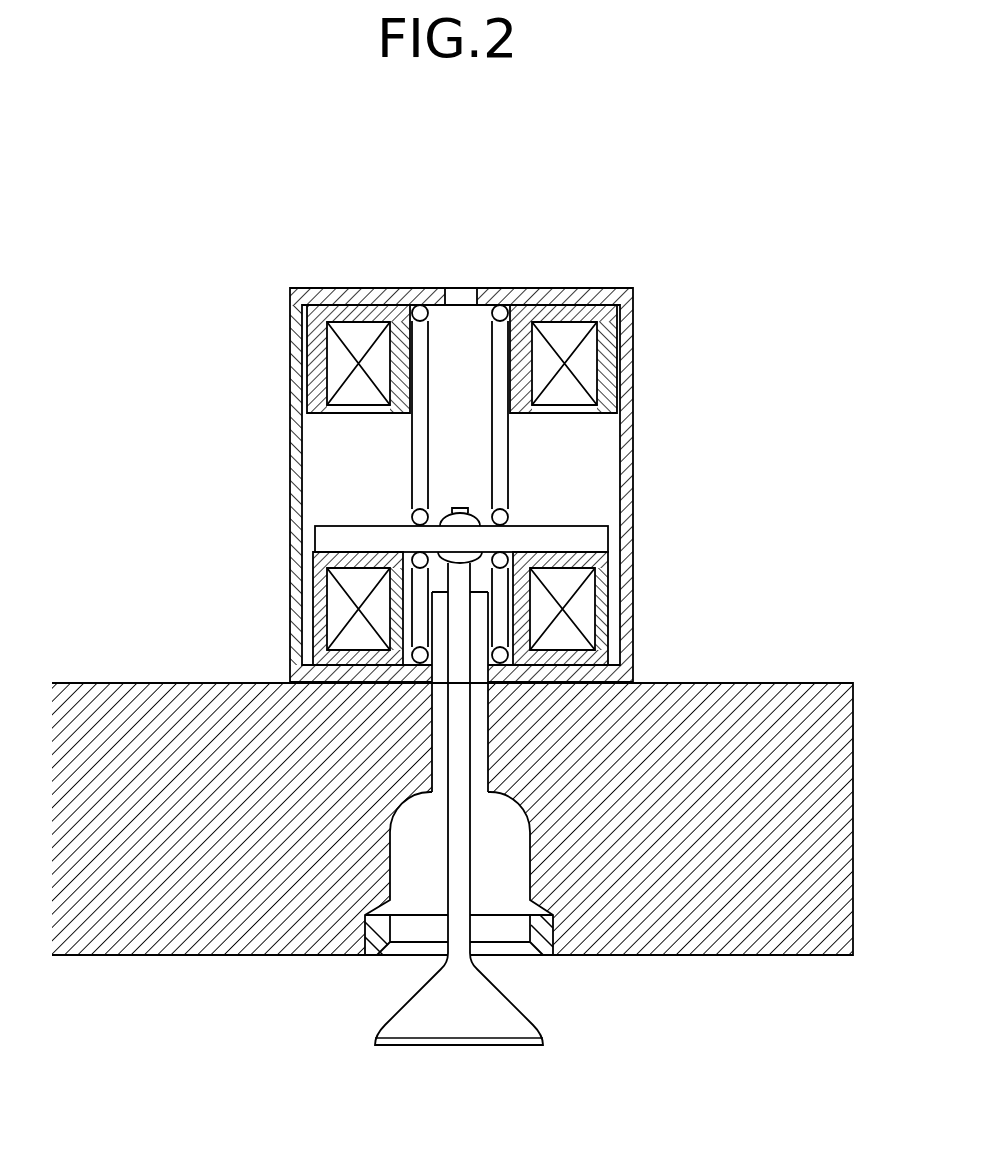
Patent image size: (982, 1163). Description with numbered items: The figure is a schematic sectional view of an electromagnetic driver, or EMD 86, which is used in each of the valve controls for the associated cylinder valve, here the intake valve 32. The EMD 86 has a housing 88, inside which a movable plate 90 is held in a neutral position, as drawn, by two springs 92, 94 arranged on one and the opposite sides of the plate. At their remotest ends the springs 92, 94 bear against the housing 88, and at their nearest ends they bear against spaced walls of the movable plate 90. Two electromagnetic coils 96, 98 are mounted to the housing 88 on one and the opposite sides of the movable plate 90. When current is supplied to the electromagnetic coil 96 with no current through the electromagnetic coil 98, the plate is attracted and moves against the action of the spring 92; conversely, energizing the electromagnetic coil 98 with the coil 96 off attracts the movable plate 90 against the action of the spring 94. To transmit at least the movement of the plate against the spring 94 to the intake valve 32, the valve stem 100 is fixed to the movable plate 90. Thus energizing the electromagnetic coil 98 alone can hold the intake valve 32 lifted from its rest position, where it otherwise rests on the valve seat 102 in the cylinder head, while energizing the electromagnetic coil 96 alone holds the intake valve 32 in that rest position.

The intake valve 32 is at (462, 1045).
The electromagnetic driver (EMD) 86 is at (548, 442).
The housing 88 is at (632, 470).
The movable plate 90 is at (588, 537).
The spring 92 is at (498, 307).
The spring 94 is at (502, 652).
The electromagnetic coil 96 is at (585, 362).
The electromagnetic coil 98 is at (583, 598).
The valve stem 100 is at (455, 845).
The valve seat 102 is at (533, 948).